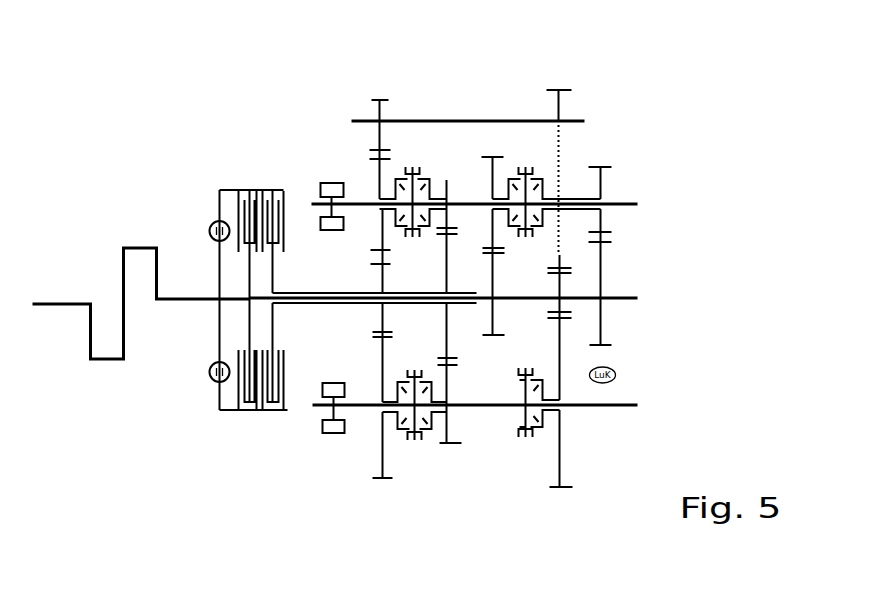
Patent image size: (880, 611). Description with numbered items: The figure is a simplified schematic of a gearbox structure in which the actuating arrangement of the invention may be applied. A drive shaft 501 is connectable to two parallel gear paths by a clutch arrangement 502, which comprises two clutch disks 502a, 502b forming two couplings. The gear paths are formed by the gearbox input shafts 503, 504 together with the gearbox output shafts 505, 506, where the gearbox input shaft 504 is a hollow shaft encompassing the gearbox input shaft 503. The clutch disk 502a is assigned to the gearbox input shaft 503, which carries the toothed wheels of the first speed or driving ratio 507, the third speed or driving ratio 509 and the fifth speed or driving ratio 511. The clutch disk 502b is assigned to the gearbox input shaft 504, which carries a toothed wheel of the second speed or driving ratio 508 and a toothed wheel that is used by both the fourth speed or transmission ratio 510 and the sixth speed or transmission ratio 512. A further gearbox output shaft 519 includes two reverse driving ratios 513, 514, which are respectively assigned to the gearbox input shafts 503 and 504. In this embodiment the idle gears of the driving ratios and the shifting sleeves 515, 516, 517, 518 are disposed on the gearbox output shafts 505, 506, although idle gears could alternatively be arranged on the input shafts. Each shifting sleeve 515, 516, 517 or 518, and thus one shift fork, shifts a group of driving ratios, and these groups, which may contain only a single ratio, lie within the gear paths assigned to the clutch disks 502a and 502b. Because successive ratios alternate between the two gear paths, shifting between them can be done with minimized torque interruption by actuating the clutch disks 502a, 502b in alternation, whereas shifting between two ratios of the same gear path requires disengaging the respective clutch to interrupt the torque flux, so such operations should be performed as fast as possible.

The drive shaft 501 is at (178, 303).
The clutch arrangement 502 is at (204, 175).
The clutch disk 502a is at (250, 197).
The clutch disk 502b is at (273, 197).
The gearbox input shaft 503 is at (617, 295).
The gearbox input shaft 504 is at (298, 303).
The gearbox output shaft 505 is at (617, 200).
The gearbox output shaft 506 is at (618, 402).
The first speed or driving ratio 507 is at (562, 525).
The second speed or driving ratio 508 is at (385, 525).
The third speed or driving ratio 509 is at (493, 130).
The fourth speed or transmission ratio 510 is at (450, 480).
The fifth speed or driving ratio 511 is at (601, 136).
The sixth speed or transmission ratio 512 is at (446, 152).
The reverse driving ratio 513 is at (559, 60).
The reverse driving ratio 514 is at (380, 78).
The shifting sleeve 515 is at (413, 167).
The shifting sleeve 516 is at (527, 165).
The shifting sleeve 517 is at (420, 440).
The shifting sleeve 518 is at (525, 437).
The gearbox output shaft 519 is at (362, 122).